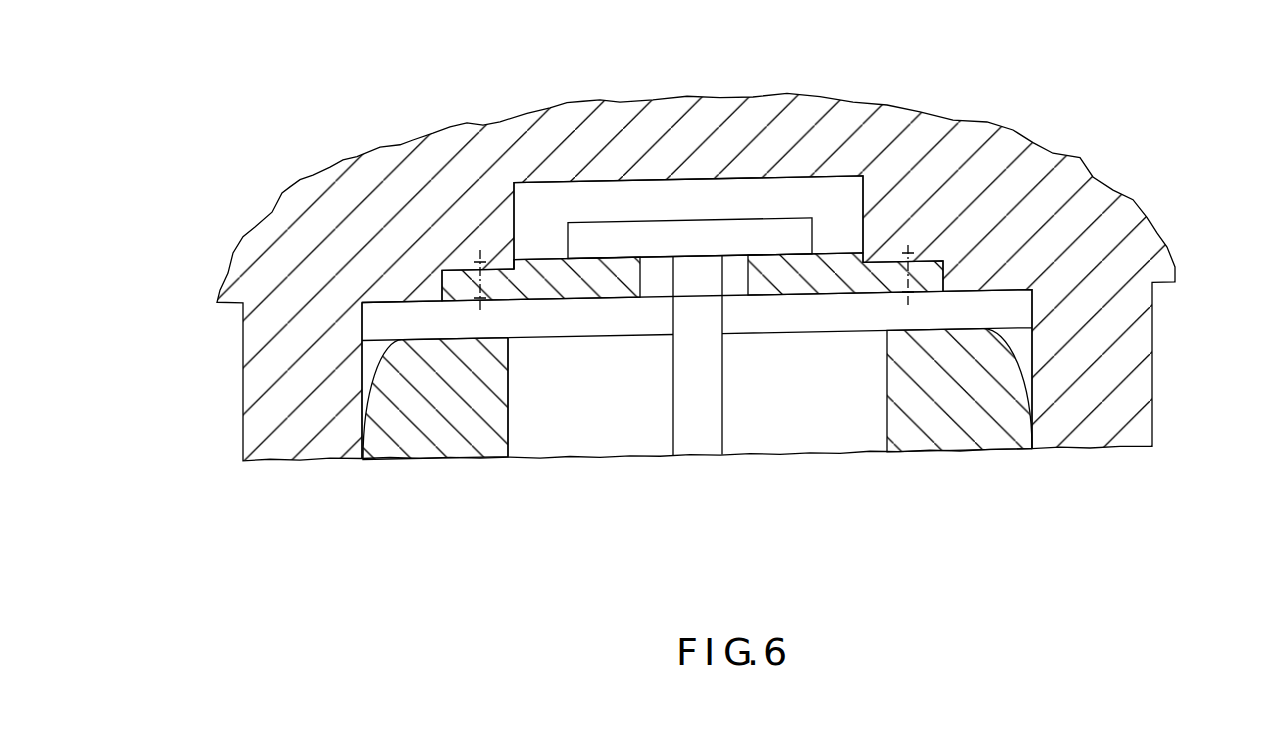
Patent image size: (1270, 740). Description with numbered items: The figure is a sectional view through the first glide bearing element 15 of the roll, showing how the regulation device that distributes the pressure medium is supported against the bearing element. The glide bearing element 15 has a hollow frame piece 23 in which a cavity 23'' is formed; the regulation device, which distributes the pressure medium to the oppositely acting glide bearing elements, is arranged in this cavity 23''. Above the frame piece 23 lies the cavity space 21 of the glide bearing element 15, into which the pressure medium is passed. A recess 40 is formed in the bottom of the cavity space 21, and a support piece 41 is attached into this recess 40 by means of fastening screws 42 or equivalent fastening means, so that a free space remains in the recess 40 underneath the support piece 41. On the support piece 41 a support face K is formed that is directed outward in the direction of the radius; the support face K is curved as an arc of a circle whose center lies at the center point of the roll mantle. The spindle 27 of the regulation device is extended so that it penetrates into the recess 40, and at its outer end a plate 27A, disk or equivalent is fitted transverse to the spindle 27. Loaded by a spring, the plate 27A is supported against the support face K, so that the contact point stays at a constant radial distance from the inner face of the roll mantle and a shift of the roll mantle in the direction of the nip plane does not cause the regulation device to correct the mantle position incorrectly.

The glide bearing element 15 is at (273, 377).
The cavity space 21 is at (1003, 313).
The hollow frame piece 23 is at (697, 430).
The cavity 23'' is at (556, 434).
The valve stem 27 is at (703, 427).
The plate 27A is at (697, 237).
The recess 40 is at (600, 203).
The support piece 41 is at (828, 277).
The fastening screws 42 is at (478, 262).
The support face K is at (540, 256).